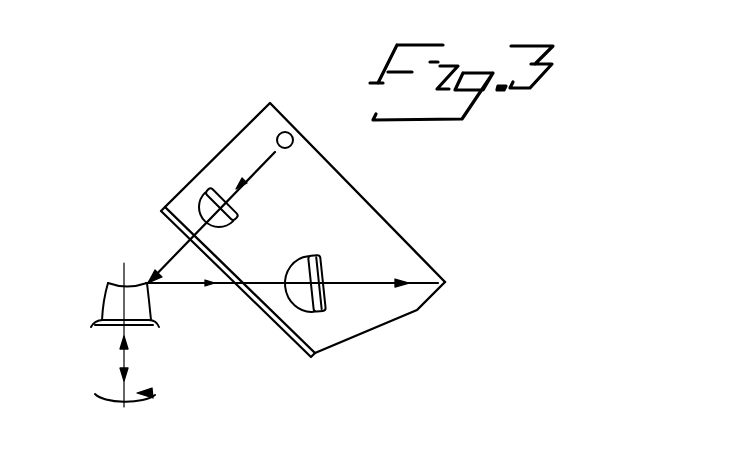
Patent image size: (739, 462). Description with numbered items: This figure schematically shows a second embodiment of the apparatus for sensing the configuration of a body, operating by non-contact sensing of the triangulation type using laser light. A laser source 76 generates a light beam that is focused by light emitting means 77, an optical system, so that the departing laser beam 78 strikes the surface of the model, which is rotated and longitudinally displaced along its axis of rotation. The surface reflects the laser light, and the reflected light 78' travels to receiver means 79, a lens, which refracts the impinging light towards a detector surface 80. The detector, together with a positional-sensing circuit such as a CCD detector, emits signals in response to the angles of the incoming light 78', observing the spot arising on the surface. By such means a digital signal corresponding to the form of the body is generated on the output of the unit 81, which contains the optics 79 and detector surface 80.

The laser source 76 is at (291, 134).
The light emitting means 77 is at (203, 194).
The departing laser beam 78 is at (201, 217).
The reflected light 78' is at (292, 305).
The receiver means 79 is at (310, 313).
The detector surface 80 is at (408, 243).
The unit 81 is at (365, 336).